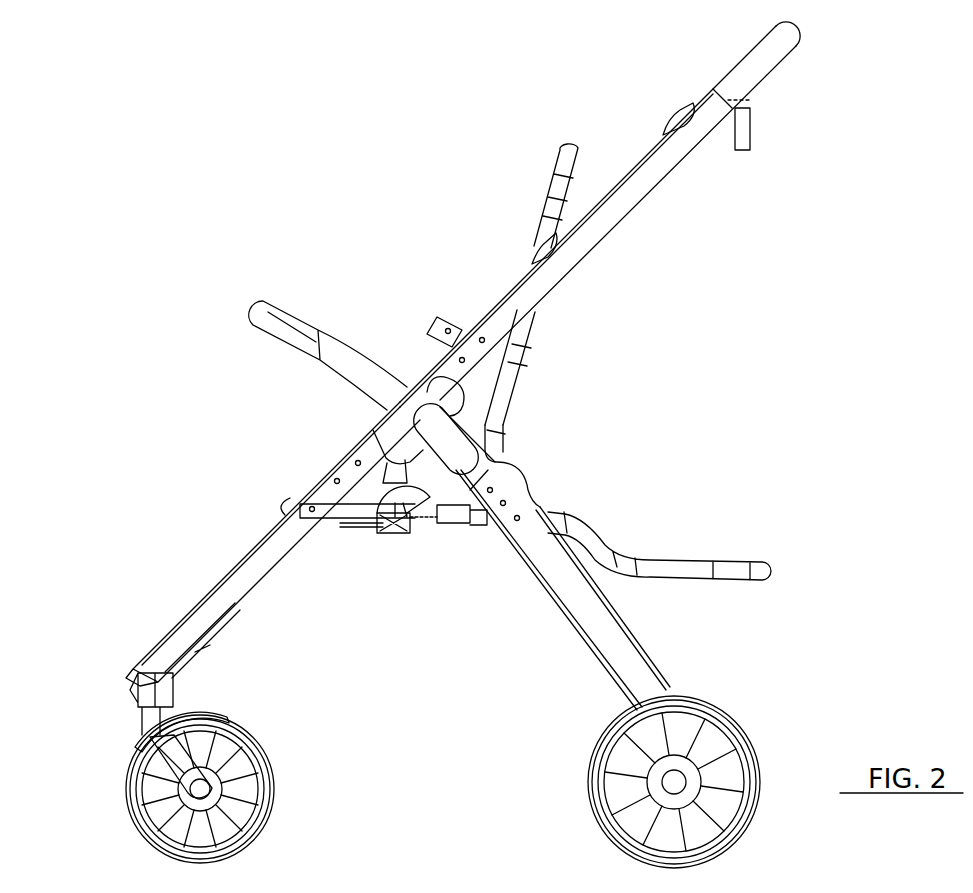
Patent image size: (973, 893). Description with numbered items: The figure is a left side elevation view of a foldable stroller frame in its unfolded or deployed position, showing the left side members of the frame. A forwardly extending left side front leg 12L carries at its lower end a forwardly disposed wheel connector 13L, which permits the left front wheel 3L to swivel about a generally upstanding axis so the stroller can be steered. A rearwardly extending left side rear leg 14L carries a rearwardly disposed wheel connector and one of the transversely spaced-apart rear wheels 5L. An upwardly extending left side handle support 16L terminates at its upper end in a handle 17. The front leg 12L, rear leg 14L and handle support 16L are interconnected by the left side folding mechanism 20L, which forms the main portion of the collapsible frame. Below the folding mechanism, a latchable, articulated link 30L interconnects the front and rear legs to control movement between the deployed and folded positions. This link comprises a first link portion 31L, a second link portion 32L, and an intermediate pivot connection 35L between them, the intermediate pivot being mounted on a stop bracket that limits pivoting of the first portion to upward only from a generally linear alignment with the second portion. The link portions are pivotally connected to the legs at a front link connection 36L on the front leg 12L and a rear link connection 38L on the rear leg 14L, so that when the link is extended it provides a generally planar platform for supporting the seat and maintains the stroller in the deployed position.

The handle 17 is at (813, 45).
The left side handle support 16L is at (596, 261).
The left side folding mechanism 20L is at (368, 413).
The front link connection 36L is at (315, 501).
The rear link connection 38L is at (525, 506).
The left side front leg 12L is at (227, 570).
The second link portion 32L is at (341, 523).
The intermediate pivot connection 35L is at (407, 533).
The left side latchable articulated link 30L is at (417, 546).
The first link portion 31L is at (443, 528).
The left front wheel connector 13L is at (190, 695).
The left front wheel 3L is at (270, 757).
The left side rear leg 14L is at (663, 650).
The left rear wheel 5L is at (752, 727).